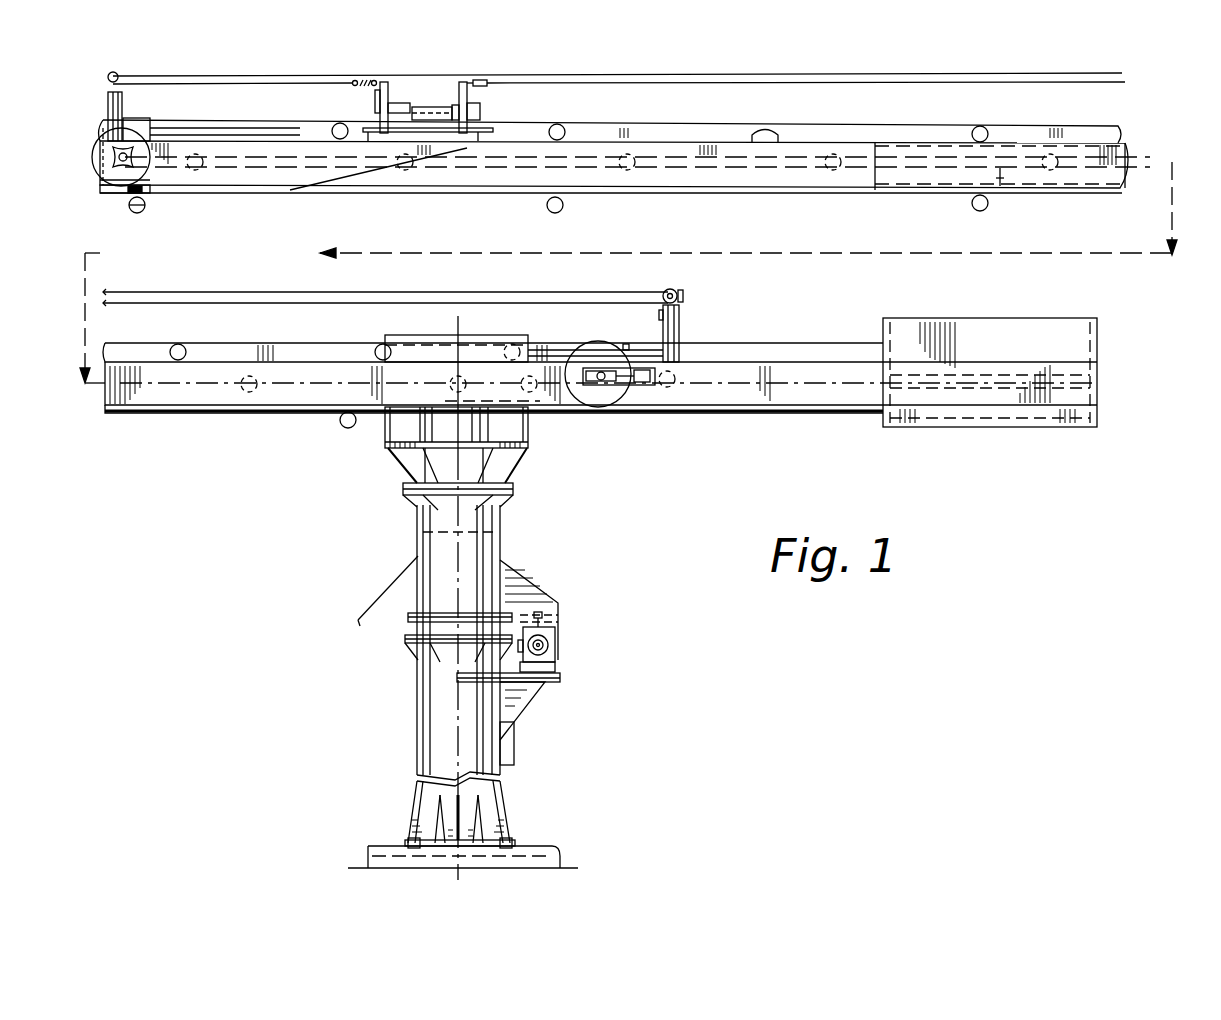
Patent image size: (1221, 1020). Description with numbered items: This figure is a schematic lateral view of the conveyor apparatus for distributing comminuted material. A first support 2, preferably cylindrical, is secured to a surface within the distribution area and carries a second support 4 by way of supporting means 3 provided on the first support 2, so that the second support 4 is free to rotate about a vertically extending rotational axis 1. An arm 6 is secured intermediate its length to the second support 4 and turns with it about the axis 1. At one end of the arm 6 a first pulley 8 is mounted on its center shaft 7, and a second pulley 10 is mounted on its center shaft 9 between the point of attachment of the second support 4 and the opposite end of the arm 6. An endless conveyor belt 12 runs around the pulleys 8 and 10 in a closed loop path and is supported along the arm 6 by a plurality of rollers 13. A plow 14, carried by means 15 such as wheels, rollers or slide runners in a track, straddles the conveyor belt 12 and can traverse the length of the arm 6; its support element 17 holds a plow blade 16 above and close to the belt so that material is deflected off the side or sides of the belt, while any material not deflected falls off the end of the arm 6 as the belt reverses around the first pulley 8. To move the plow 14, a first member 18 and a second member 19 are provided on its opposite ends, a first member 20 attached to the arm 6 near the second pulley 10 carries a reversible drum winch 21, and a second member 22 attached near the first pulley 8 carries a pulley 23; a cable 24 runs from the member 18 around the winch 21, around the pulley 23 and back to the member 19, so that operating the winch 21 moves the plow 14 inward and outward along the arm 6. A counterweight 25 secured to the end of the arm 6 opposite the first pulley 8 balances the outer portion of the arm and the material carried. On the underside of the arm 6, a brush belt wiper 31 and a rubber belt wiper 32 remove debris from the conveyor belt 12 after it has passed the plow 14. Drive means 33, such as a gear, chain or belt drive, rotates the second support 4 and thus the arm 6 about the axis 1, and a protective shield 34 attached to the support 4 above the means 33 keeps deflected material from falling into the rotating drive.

The vertically extending rotational axis 1 is at (452, 552).
The first support 2 is at (420, 744).
The means for supporting second support 3 is at (408, 650).
The second support 4 is at (503, 522).
The arm 6 is at (1078, 168).
The center shaft 7 is at (128, 170).
The first pulley 8 is at (100, 175).
The center shaft 9 is at (625, 372).
The second pulley 10 is at (620, 400).
The endless conveyor belt 12 is at (1060, 127).
The rollers 13 is at (982, 126).
The plow 14 is at (478, 123).
The plow supporting means 15 is at (467, 148).
The plow blade 16 is at (430, 107).
The support element 17 is at (462, 100).
The first member 18 is at (480, 82).
The second member 19 is at (384, 83).
The first member 20 is at (680, 322).
The reversible drum winch 21 is at (677, 293).
The second member 22 is at (108, 120).
The pulley 23 is at (188, 48).
The cable 24 is at (675, 73).
The counterweight 25 is at (993, 328).
The brush belt wiper 31 is at (560, 210).
The rubber belt wiper 32 is at (976, 209).
The means for rotating second support 33 is at (556, 648).
The protective shield 34 is at (538, 592).